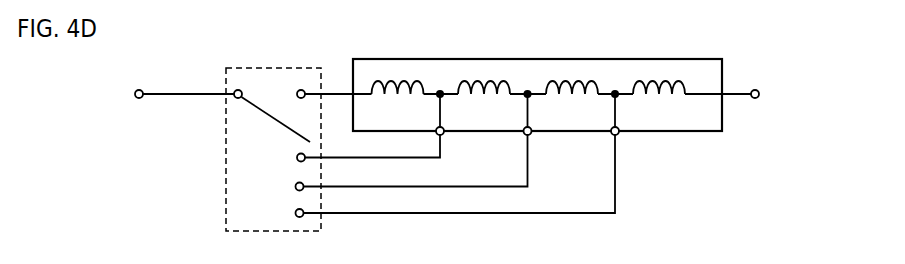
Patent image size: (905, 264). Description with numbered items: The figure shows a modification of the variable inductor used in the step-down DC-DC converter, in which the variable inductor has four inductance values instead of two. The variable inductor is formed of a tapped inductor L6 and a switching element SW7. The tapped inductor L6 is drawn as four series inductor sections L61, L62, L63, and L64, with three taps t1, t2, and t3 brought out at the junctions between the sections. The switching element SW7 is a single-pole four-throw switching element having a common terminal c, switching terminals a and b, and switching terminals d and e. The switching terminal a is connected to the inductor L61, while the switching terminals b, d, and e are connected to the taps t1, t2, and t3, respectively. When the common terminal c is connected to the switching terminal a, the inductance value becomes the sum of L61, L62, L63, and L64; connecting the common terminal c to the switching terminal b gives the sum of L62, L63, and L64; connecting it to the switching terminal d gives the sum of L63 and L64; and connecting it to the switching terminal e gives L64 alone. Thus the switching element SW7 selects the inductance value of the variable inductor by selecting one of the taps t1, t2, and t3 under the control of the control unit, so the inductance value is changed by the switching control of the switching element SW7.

The switching element SW7 is at (273, 135).
The tapped inductor L6 is at (552, 93).
The inductor L61 is at (398, 100).
The inductor L62 is at (484, 100).
The inductor L63 is at (572, 100).
The inductor L64 is at (659, 100).
The tap t1 is at (451, 142).
The tap t2 is at (539, 142).
The tap t3 is at (626, 142).
The switching terminal a is at (293, 95).
The switching terminal b is at (293, 157).
The common terminal c is at (238, 105).
The switching terminal d is at (293, 187).
The switching terminal e is at (293, 213).